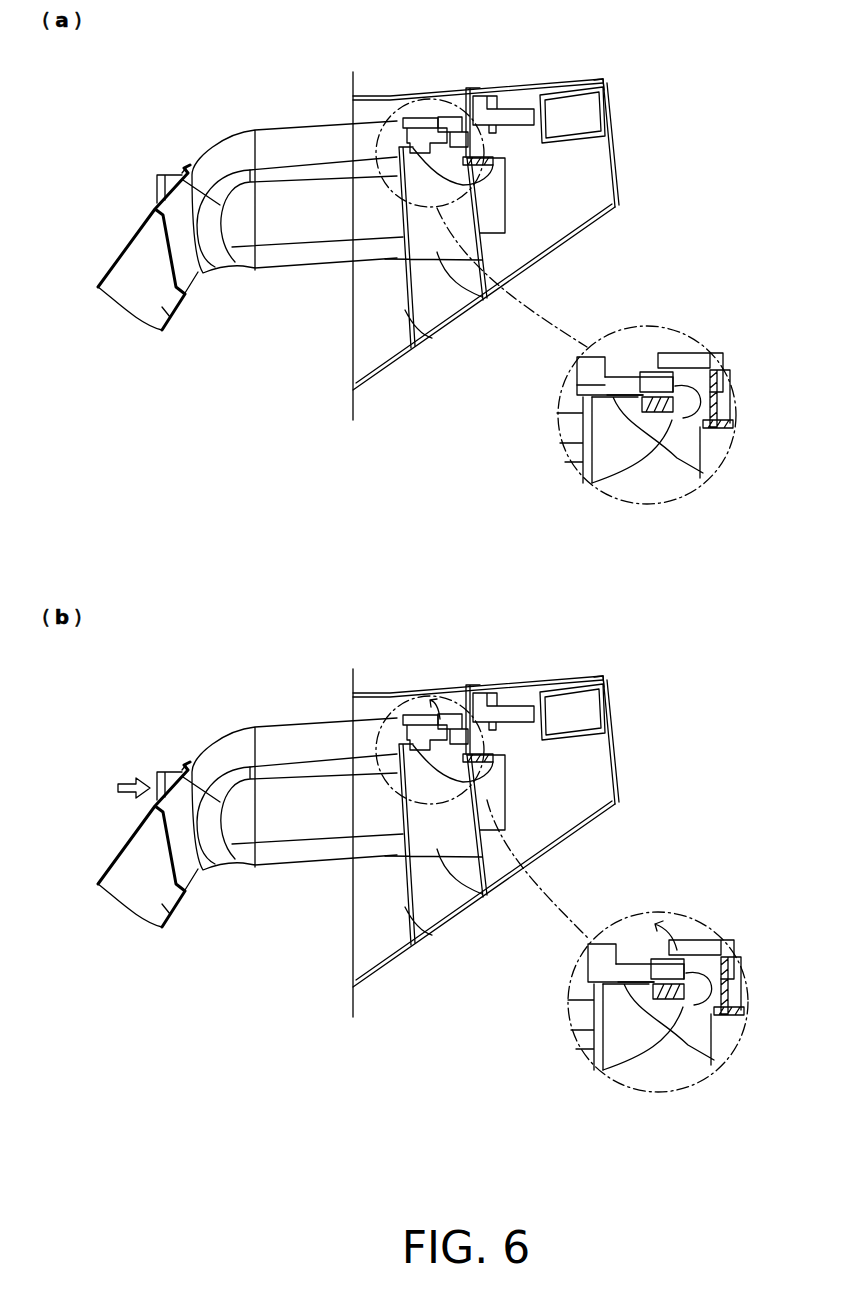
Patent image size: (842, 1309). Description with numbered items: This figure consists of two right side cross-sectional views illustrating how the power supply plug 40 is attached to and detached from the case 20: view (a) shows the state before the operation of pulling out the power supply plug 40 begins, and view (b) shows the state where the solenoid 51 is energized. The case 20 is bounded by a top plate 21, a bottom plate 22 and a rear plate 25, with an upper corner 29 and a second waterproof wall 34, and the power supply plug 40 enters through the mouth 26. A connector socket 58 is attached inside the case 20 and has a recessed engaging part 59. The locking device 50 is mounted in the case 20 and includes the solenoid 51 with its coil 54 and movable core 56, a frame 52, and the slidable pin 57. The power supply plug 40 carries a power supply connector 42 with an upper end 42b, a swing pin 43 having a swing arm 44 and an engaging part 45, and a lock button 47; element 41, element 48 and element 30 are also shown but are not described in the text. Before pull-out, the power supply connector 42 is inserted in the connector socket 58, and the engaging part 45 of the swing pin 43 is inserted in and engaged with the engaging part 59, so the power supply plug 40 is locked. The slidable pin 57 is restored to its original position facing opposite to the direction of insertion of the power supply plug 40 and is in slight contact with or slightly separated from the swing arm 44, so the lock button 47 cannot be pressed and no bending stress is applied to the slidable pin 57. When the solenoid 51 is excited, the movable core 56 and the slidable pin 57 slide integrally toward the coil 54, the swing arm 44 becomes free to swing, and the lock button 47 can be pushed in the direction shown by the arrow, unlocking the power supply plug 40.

The case 20 is at (483, 527).
The top plate 21 is at (390, 96).
The bottom plate 22 is at (380, 372).
The rear plate 25 is at (613, 178).
The mouth 26 is at (353, 318).
The upper corner 29 is at (603, 79).
The holder 30 is at (519, 631).
The second waterproof wall 34 is at (484, 259).
The power supply plug 40 is at (293, 504).
The inner duct 41 is at (318, 185).
The power supply connector 42 is at (563, 643).
The upper end 42b is at (603, 392).
The swing pin 43 is at (422, 130).
The swing arm 44 is at (628, 376).
The engaging part 45 is at (681, 426).
The lock button 47 is at (160, 180).
The lower bar 48 is at (167, 317).
The locking device 50 is at (579, 491).
The solenoid 51 is at (481, 92).
The frame 52 is at (599, 392).
The coil 54 is at (598, 112).
The movable core 56 is at (522, 115).
The slidable pin 57 is at (455, 122).
The connector socket 58 is at (482, 299).
The engaging part 59 is at (719, 401).